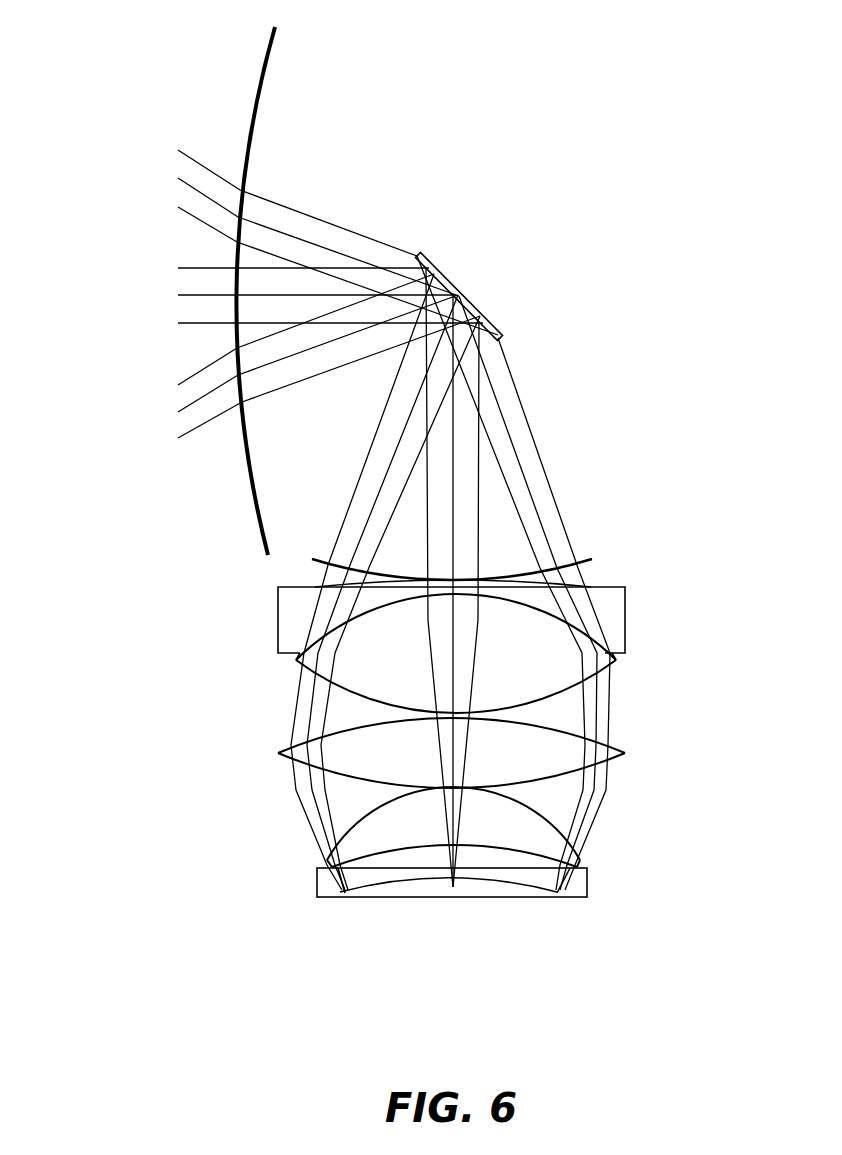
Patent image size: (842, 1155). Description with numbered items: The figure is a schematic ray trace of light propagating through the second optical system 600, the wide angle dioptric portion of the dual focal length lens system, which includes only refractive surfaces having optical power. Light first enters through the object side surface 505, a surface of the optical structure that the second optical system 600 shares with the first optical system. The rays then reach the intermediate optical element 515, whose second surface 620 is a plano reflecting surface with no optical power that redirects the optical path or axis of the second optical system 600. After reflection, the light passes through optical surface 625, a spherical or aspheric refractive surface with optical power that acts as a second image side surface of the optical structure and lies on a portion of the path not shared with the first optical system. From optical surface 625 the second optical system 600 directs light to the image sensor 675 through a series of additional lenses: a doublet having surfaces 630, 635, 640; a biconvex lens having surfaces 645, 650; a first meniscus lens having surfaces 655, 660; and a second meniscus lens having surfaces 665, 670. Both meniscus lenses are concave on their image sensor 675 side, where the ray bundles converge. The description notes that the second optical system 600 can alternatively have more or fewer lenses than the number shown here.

The second optical system 600 is at (124, 64).
The object side surface 505 is at (268, 548).
The intermediate optical element 515 is at (481, 311).
The second surface 620 is at (455, 292).
The optical surface 625 is at (589, 560).
The doublet surface 630 is at (608, 586).
The doublet surface 635 is at (590, 642).
The doublet surface 640 is at (304, 674).
The biconvex lens surface 645 is at (318, 745).
The biconvex lens surface 650 is at (594, 766).
The first meniscus lens surface 655 is at (343, 848).
The first meniscus lens surface 660 is at (523, 860).
The second meniscus lens surface 665 is at (380, 868).
The second meniscus lens surface 670 is at (507, 879).
The image sensor 675 is at (432, 893).